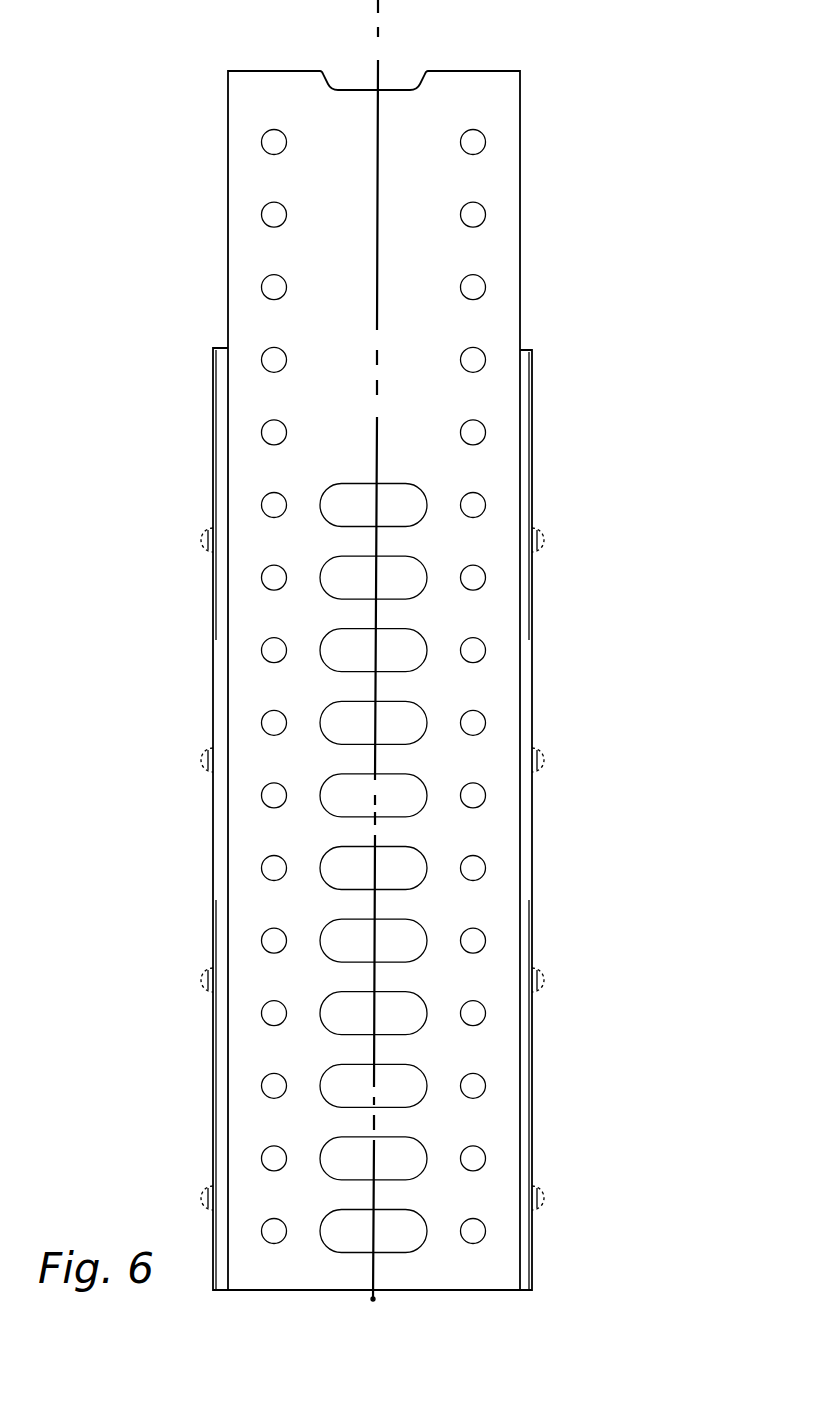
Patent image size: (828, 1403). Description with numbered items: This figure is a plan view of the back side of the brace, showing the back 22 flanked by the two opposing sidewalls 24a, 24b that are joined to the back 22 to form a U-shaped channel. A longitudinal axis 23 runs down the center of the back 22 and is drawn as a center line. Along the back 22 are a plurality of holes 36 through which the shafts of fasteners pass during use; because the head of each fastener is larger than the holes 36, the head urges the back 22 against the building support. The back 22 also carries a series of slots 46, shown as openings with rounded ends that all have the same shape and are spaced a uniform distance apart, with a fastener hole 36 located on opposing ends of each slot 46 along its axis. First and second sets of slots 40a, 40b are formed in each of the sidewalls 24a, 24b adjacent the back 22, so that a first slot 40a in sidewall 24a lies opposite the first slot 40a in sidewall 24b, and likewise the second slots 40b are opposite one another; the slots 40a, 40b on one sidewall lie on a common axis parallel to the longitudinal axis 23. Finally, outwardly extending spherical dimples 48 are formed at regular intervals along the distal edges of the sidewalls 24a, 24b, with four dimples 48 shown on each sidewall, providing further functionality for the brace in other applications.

The back 22 is at (418, 182).
The longitudinal axis 23 is at (388, 22).
The sidewall 24a is at (213, 417).
The sidewall 24b is at (535, 423).
The holes 36 is at (478, 294).
The first slot 40a is at (213, 613).
The second slot 40b is at (213, 1103).
The slots 46 is at (403, 718).
The dimples 48 is at (210, 978).